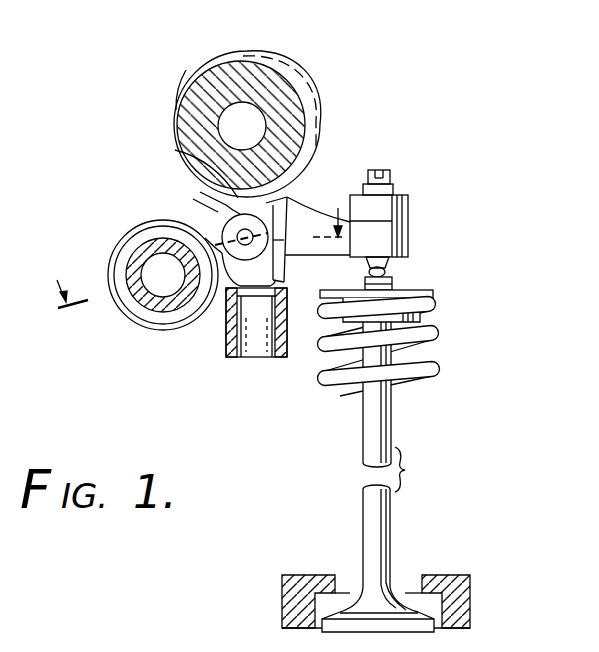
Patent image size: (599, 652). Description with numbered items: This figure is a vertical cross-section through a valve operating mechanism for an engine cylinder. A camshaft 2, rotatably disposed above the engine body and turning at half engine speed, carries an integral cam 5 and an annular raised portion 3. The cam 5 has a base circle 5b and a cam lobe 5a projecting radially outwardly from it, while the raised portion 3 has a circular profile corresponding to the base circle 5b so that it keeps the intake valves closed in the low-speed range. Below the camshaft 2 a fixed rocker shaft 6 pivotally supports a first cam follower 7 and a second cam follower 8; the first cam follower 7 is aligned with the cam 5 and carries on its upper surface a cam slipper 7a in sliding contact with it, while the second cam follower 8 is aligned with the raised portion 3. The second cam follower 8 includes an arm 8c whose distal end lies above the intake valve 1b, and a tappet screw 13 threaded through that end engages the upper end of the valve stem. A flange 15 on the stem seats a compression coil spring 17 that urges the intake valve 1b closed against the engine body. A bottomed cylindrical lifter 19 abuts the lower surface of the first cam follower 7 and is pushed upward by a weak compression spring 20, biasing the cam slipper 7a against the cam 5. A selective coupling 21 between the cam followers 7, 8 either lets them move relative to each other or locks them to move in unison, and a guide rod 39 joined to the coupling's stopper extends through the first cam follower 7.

The cam 5 is at (227, 52).
The cam lobe 5a is at (284, 49).
The base circle 5b is at (182, 86).
The camshaft 2 is at (180, 113).
The annular raised portion 3 is at (312, 100).
The cam slipper 7a is at (196, 157).
The selective coupling 21 is at (205, 200).
The first cam follower 7 is at (210, 222).
The rocker shaft 6 is at (140, 248).
The second cam follower 8 is at (224, 294).
The guide rod 39 is at (285, 270).
The arm 8c is at (404, 236).
The tappet screw 13 is at (377, 172).
The flange 15 is at (433, 293).
The compression coil spring 17 is at (419, 454).
The intake valve 1b is at (392, 448).
The bottomed cylindrical lifter 19 is at (287, 325).
The compression spring 20 is at (230, 352).